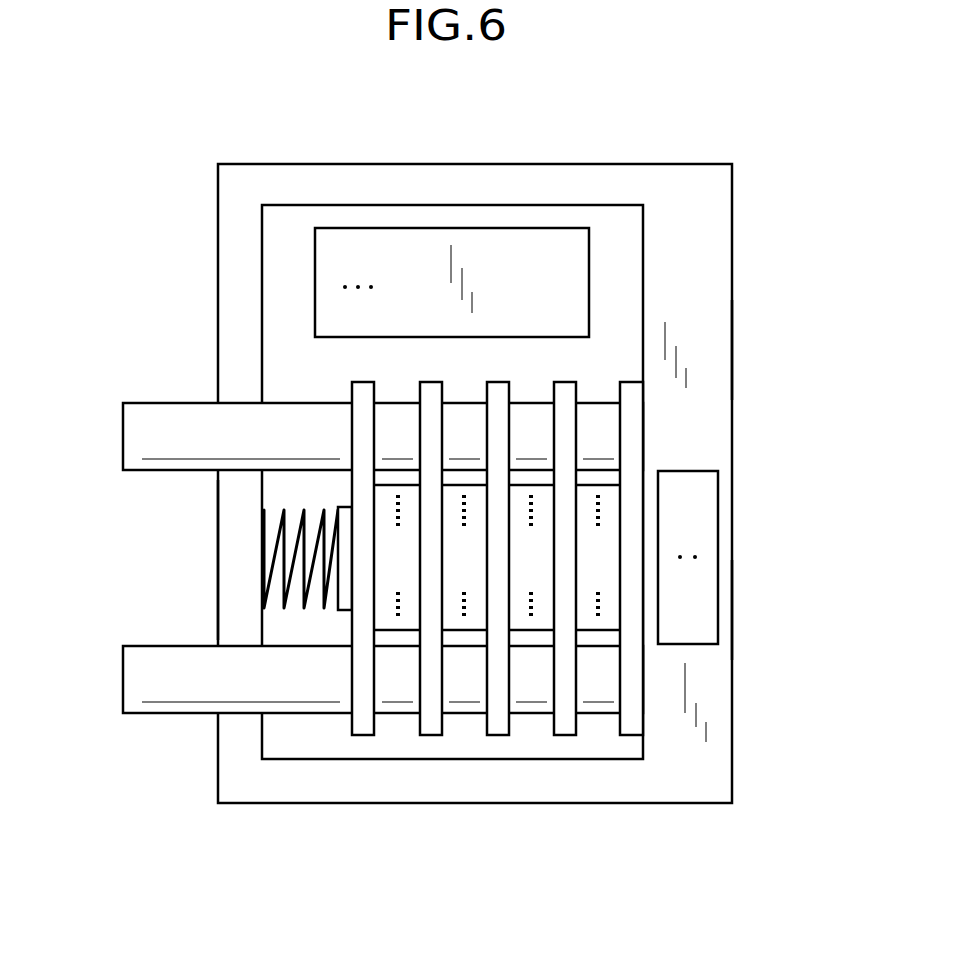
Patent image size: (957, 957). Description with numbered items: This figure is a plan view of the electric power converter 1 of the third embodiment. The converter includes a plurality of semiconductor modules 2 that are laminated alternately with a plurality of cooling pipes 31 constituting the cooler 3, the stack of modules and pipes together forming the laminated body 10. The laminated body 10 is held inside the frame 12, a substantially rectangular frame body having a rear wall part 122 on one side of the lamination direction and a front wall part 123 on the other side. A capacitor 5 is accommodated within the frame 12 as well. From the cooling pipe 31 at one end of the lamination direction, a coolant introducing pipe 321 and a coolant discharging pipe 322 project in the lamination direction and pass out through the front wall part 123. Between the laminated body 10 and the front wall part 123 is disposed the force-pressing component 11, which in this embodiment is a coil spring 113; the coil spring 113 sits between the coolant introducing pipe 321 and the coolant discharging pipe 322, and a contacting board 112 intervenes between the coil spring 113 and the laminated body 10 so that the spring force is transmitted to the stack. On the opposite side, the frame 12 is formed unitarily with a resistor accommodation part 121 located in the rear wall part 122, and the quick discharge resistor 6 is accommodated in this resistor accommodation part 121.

The electric power converter 1 is at (623, 128).
The semiconductor module 2 is at (410, 615).
The cooler 3 is at (635, 722).
The capacitor 5 is at (393, 257).
The quick discharge resistor 6 is at (688, 514).
The laminated body 10 is at (607, 357).
The force-pressing component 11 is at (316, 616).
The frame 12 is at (656, 185).
The cooling pipe 31 is at (567, 724).
The contacting board 112 is at (345, 603).
The coil spring 113 is at (287, 612).
The resistor accommodation part 121 is at (716, 591).
The rear wall part 122 is at (698, 363).
The front wall part 123 is at (233, 556).
The coolant introducing pipe 321 is at (146, 703).
The coolant discharging pipe 322 is at (147, 424).